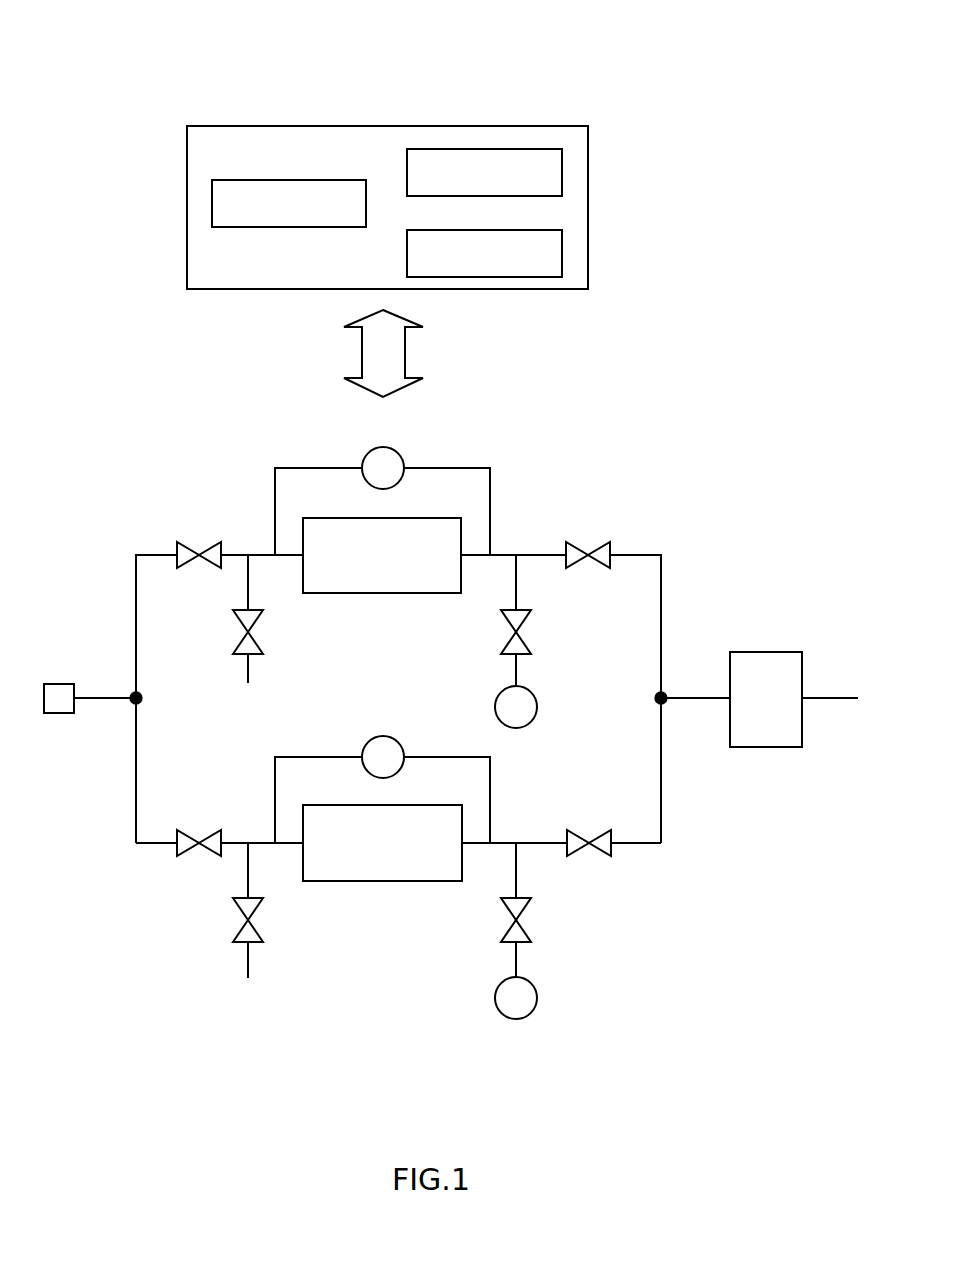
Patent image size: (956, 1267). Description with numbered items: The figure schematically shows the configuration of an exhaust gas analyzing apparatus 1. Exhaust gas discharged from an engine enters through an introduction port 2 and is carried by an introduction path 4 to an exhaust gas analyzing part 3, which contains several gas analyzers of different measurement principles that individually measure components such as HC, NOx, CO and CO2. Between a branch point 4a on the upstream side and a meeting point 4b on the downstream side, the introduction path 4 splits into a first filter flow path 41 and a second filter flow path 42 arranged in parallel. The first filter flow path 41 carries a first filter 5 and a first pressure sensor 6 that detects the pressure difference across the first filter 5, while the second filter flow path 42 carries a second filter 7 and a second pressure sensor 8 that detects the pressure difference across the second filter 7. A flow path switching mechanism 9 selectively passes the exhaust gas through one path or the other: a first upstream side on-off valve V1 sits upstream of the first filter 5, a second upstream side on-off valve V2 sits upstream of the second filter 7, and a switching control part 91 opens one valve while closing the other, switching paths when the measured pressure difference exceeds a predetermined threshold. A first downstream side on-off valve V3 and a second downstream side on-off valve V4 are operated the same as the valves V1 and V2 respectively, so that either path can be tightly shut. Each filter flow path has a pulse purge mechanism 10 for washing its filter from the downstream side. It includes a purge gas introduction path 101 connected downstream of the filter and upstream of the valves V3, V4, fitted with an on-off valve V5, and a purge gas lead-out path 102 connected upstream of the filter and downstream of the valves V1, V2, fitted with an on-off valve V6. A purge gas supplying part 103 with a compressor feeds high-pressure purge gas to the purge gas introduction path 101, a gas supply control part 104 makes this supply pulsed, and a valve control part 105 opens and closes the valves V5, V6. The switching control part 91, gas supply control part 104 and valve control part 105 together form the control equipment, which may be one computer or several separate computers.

The exhaust gas analyzing apparatus 1 is at (445, 515).
The introduction port 2 is at (57, 684).
The exhaust gas analyzing part 3 is at (767, 652).
The introduction path 4 is at (100, 700).
The branch point 4a is at (140, 700).
The meeting point 4b is at (657, 700).
The first filter flow path 41 is at (145, 553).
The second filter flow path 42 is at (145, 843).
The first filter 5 is at (382, 593).
The first pressure sensor 6 is at (370, 452).
The second filter 7 is at (382, 881).
The second pressure sensor 8 is at (370, 740).
The flow path switching mechanism 9 is at (162, 527).
The switching control part 91 is at (212, 202).
The pulse purge mechanism 10 is at (402, 542).
The purge gas introduction path 101 is at (516, 580).
The purge gas lead-out path 102 is at (248, 580).
The purge gas supplying part 103 is at (497, 703).
The gas supply control part 104 is at (562, 172).
The valve control part 105 is at (562, 250).
The first upstream side on-off valve V1 is at (199, 552).
The second upstream side on-off valve V2 is at (199, 840).
The first downstream side on-off valve V3 is at (588, 552).
The second downstream side on-off valve V4 is at (589, 840).
The on-off valve V5 is at (510, 632).
The on-off valve V6 is at (254, 632).